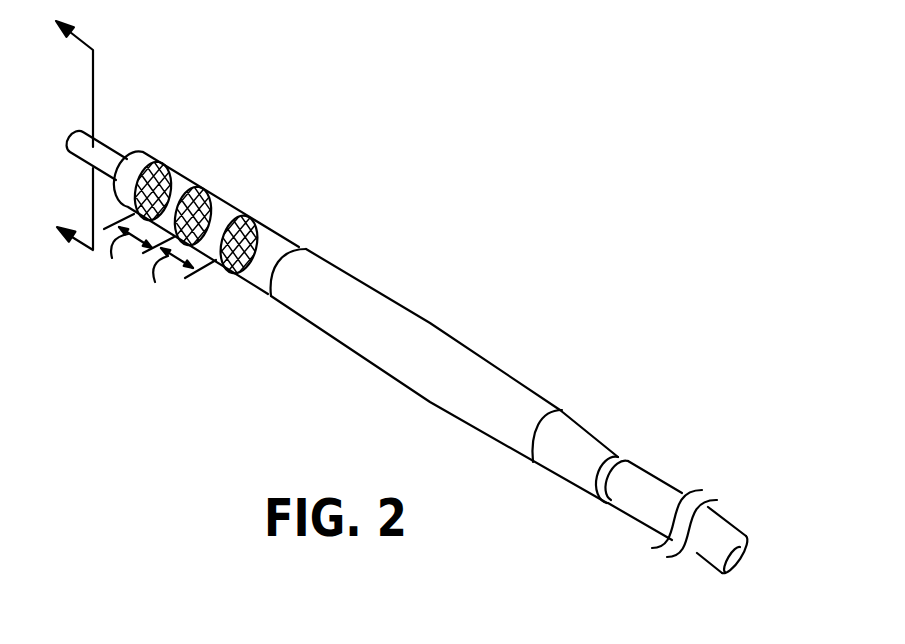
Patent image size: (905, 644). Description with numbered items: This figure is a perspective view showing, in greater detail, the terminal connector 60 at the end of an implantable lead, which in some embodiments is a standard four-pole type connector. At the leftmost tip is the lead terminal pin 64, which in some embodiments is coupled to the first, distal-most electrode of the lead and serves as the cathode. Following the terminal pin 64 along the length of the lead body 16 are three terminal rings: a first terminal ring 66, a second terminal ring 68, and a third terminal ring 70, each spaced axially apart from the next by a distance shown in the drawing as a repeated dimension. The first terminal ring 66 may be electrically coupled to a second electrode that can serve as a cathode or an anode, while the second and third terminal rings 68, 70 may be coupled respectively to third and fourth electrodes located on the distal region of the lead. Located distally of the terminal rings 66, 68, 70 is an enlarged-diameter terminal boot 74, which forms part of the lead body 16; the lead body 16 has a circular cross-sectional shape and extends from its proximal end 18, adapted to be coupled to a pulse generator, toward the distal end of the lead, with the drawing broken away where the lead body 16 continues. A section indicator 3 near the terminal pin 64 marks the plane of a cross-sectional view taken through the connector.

The section line 3- 3 is at (65, 126).
The lead body 16 is at (666, 480).
The proximal end 18 is at (630, 514).
The terminal connector 60 is at (272, 96).
The lead terminal pin 64 is at (78, 147).
The first terminal ring 66 is at (172, 172).
The second terminal ring 68 is at (217, 196).
The third terminal ring 70 is at (256, 220).
The terminal boot 74 is at (417, 393).